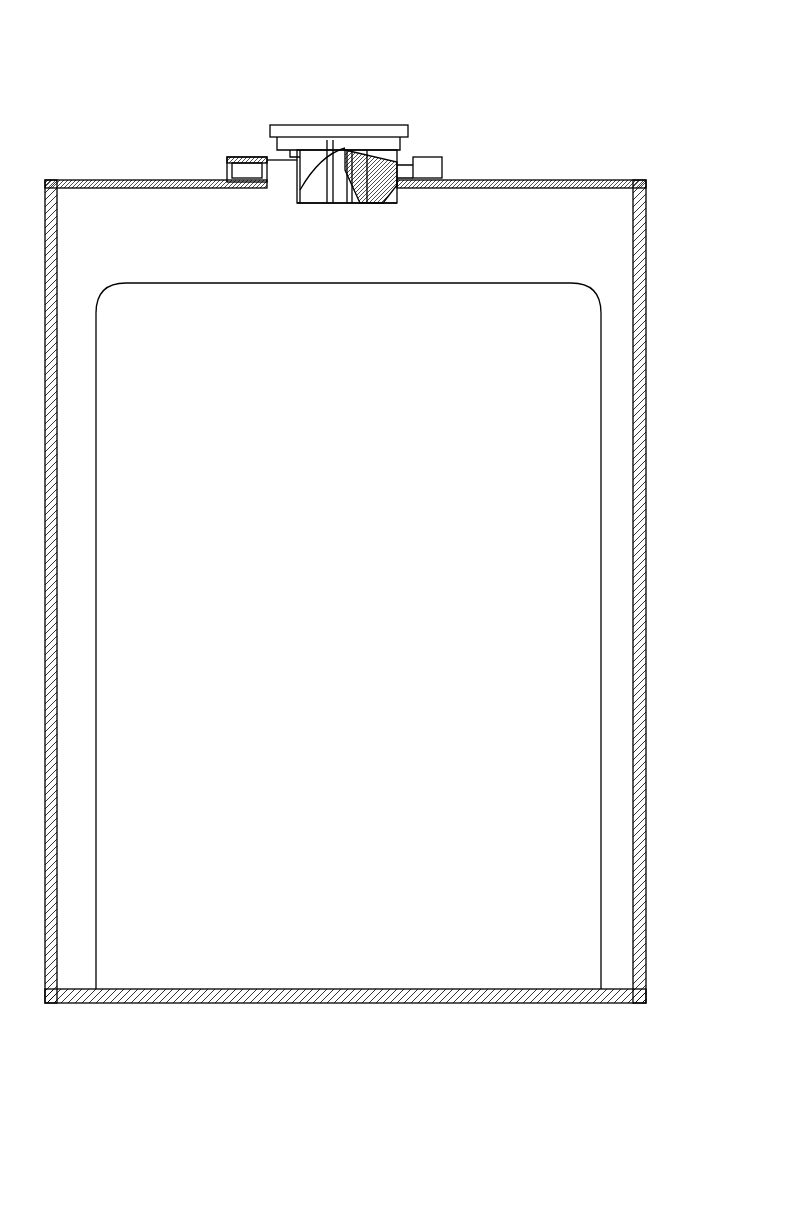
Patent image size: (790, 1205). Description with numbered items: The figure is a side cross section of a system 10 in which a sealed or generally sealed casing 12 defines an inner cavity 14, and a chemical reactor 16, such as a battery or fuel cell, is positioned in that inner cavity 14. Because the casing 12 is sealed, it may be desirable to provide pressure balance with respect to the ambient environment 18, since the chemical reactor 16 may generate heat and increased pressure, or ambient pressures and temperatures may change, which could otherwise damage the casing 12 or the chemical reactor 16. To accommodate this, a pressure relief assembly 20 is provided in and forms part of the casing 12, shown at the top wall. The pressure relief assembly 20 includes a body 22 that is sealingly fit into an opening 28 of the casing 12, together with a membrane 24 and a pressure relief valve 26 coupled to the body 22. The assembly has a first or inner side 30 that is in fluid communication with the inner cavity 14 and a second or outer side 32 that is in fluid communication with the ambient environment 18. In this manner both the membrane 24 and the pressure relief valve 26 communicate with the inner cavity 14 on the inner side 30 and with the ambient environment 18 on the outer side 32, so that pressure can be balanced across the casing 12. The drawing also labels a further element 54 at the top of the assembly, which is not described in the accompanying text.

The system 10 is at (645, 114).
The casing 12 is at (500, 179).
The inner cavity 14 is at (608, 246).
The chemical reactor 16 is at (570, 473).
The ambient environment 18 is at (160, 92).
The pressure relief assembly 20 is at (416, 100).
The body 22 is at (413, 162).
The membrane 24 is at (256, 187).
The pressure relief valve 26 is at (308, 190).
The opening 28 is at (393, 208).
The inner side 30 is at (372, 185).
The outer side 32 is at (270, 130).
The valve stem 54 is at (326, 135).